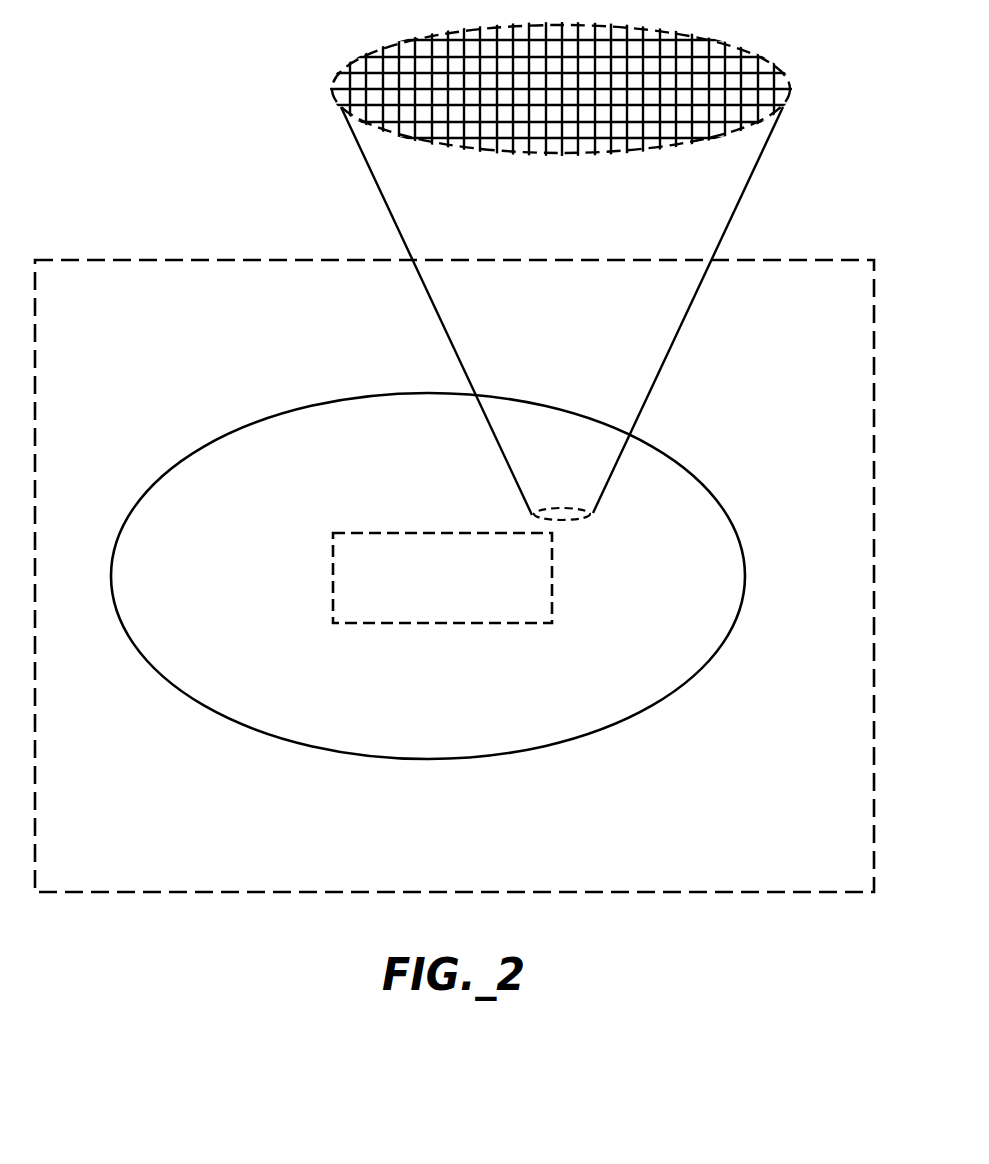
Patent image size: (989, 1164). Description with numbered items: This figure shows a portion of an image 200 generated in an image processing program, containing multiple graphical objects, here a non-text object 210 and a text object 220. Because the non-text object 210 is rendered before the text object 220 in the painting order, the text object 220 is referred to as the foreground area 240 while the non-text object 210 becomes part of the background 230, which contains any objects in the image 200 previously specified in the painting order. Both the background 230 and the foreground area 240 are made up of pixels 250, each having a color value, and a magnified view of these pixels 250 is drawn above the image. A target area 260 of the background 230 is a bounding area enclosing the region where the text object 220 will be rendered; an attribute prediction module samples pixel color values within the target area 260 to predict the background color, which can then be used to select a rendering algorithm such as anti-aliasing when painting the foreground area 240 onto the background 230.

The image 200 is at (627, 922).
The non-text object 210 is at (370, 392).
The text object 220 is at (405, 568).
The background 230 is at (643, 695).
The foreground area 240 is at (527, 545).
The pixels 250 is at (388, 62).
The target area 260 is at (552, 592).